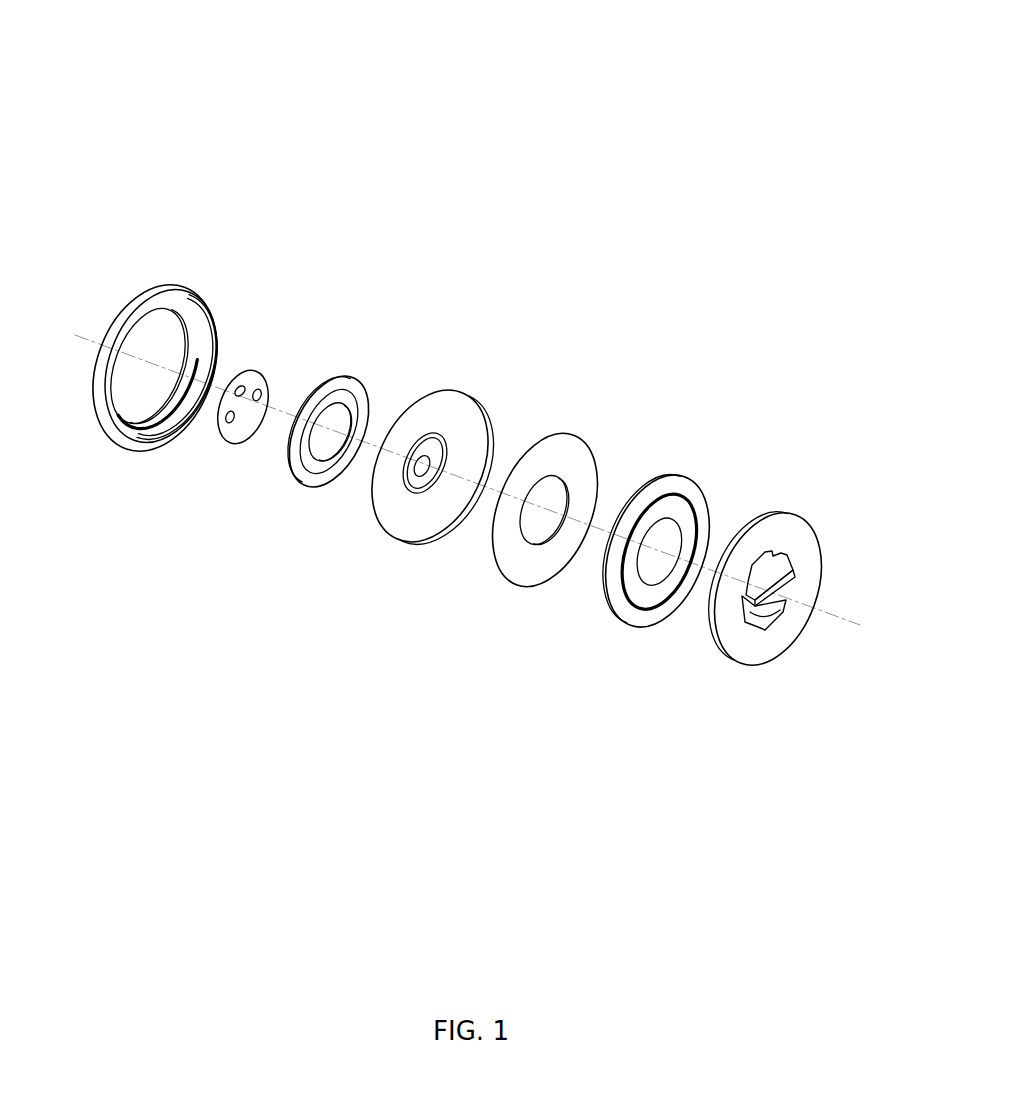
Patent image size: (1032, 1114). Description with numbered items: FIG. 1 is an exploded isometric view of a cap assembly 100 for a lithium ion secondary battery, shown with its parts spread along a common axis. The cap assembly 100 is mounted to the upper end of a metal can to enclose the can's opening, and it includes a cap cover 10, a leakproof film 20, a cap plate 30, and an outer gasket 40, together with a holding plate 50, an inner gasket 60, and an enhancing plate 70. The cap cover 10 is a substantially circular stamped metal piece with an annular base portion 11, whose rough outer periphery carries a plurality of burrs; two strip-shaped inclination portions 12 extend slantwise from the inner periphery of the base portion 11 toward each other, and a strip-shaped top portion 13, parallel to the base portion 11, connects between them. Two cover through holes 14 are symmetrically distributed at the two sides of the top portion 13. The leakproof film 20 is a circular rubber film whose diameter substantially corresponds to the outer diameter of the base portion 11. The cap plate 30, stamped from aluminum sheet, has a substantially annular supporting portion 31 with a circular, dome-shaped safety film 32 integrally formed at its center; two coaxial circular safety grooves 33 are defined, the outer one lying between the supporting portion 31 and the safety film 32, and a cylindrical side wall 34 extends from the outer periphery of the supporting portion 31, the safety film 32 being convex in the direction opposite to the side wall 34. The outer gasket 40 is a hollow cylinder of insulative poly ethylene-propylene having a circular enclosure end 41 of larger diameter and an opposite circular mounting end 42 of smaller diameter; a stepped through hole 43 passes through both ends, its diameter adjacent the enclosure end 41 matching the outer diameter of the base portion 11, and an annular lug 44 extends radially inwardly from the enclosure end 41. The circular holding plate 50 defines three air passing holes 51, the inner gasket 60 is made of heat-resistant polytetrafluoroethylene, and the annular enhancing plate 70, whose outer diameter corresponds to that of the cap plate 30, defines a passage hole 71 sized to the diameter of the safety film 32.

The cap assembly 100 is at (487, 44).
The cap cover 10 is at (793, 518).
The base portion 11 is at (740, 650).
The inclination portions 12 is at (750, 613).
The top portion 13 is at (792, 587).
The cover through holes 14 is at (762, 567).
The leakproof film 20 is at (665, 485).
The cap plate 30 is at (433, 369).
The supporting portion 31 is at (443, 417).
The safety film 32 is at (435, 458).
The safety grooves 33 is at (408, 492).
The side wall 34 is at (448, 527).
The outer gasket 40 is at (175, 288).
The enclosure end 41 is at (97, 377).
The mounting end 42 is at (208, 305).
The stepped through hole 43 is at (168, 357).
The annular lug 44 is at (153, 423).
The holding plate 50 is at (243, 436).
The air passing holes 51 is at (228, 420).
The inner gasket 60 is at (343, 380).
The enhancing plate 70 is at (512, 557).
The passage hole 71 is at (548, 528).